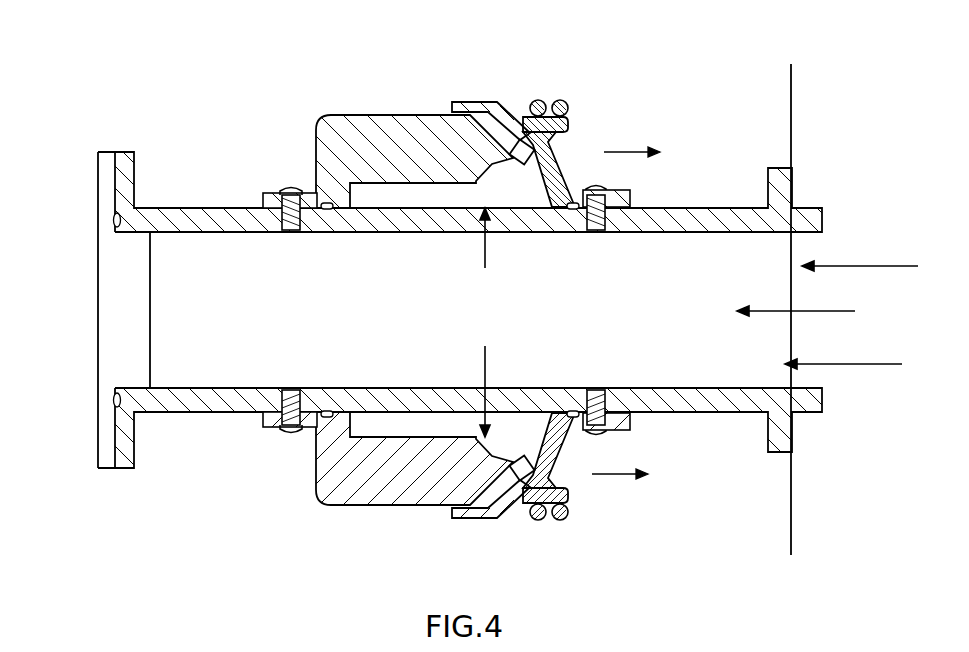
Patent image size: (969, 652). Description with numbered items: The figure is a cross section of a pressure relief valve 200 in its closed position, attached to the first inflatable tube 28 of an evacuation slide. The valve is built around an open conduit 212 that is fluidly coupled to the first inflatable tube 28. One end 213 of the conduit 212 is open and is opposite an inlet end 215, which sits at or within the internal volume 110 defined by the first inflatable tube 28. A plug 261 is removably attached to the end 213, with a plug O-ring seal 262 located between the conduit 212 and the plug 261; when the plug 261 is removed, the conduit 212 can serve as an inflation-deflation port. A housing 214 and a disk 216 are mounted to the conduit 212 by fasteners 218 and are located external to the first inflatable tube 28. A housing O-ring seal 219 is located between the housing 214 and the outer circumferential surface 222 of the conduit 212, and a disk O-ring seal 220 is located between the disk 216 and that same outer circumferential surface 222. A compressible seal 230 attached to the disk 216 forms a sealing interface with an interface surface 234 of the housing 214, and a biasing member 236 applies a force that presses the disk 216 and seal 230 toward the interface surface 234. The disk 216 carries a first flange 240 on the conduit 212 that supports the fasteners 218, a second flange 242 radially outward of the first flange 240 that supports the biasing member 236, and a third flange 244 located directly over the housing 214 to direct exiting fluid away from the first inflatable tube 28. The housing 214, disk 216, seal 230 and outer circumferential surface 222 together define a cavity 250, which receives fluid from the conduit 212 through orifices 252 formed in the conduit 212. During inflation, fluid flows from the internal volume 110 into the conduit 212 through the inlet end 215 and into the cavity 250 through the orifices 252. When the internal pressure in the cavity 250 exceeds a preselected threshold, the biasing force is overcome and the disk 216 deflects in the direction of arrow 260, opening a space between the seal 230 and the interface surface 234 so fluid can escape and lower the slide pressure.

The first inflatable tube 28 is at (791, 80).
The internal volume 110 is at (898, 115).
The pressure relief valve 200 is at (158, 92).
The conduit 212 is at (222, 403).
The end 213 is at (115, 447).
The housing 214 is at (365, 120).
The inlet end 215 is at (823, 403).
The disk 216 is at (553, 178).
The fasteners 218 is at (292, 192).
The housing O-ring seal 219 is at (330, 410).
The disk O-ring seal 220 is at (575, 412).
The outer circumferential surface 222 is at (718, 207).
The seal 230 is at (522, 143).
The interface surface 234 is at (521, 480).
The biasing member 236 is at (557, 100).
The first flange 240 is at (618, 420).
The second flange 242 is at (572, 124).
The third flange 244 is at (467, 102).
The cavity 250 is at (528, 202).
The orifices 252 is at (473, 213).
The arrow 260 is at (609, 313).
The plug 261 is at (113, 322).
The plug O-ring seal 262 is at (117, 400).